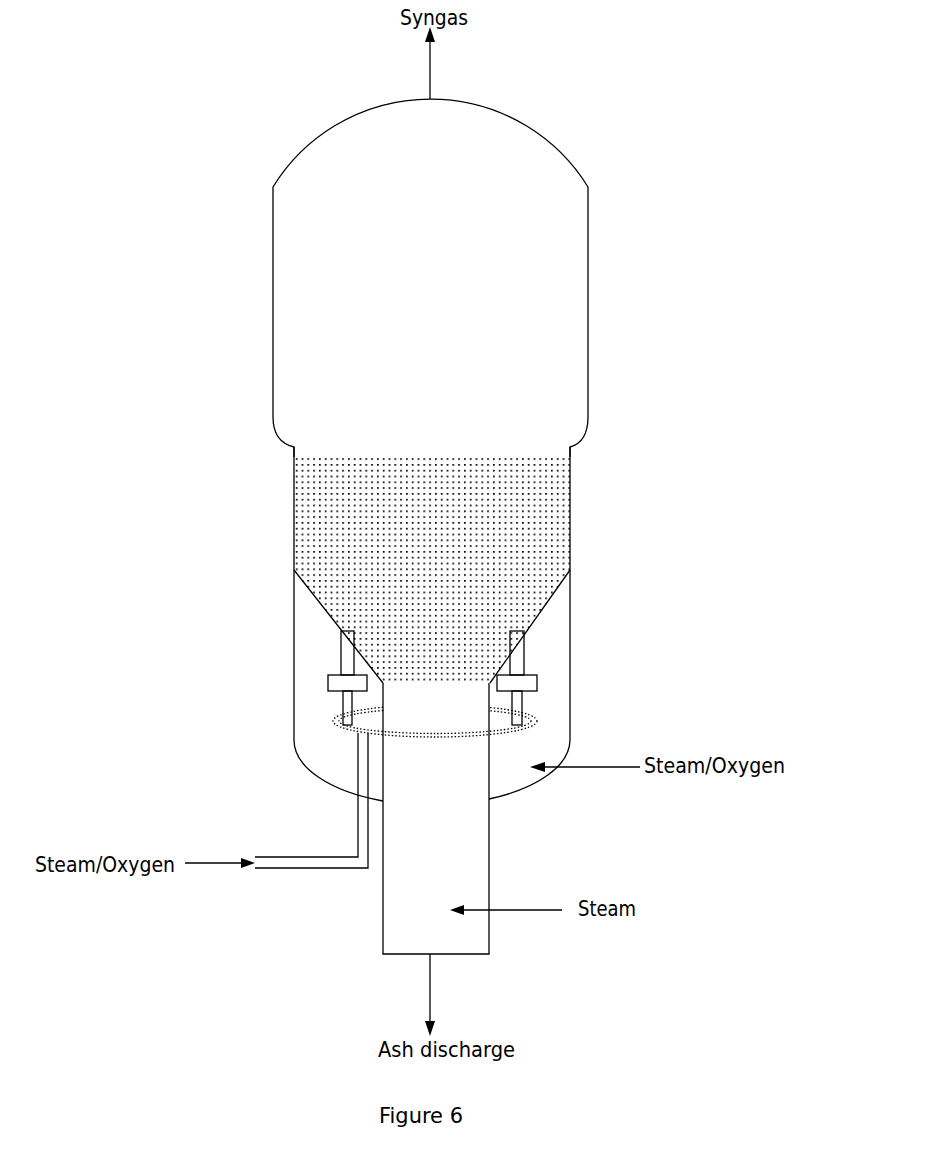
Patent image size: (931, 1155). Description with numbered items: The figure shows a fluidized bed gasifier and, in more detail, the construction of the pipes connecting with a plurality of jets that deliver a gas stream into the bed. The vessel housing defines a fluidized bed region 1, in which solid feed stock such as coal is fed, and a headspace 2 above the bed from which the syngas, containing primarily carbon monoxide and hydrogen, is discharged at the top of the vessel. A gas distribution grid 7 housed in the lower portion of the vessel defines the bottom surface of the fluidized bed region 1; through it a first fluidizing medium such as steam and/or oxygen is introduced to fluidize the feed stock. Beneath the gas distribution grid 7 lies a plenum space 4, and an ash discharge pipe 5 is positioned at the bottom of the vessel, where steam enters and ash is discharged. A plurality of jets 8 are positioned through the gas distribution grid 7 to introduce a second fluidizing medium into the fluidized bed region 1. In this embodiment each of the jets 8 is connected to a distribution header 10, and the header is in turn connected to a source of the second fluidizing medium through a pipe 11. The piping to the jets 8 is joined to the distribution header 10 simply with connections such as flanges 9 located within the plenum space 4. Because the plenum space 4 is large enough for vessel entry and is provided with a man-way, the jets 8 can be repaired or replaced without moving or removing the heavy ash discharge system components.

The fluidized bed region 1 is at (328, 512).
The headspace 2 is at (295, 275).
The plenum space 4 is at (318, 656).
The ash discharge pipe 5 is at (395, 925).
The gas distribution grid 7 is at (550, 587).
The jets 8 is at (525, 647).
The flanges 9 is at (533, 685).
The distribution header 10 is at (535, 725).
The pipe 11 is at (358, 821).